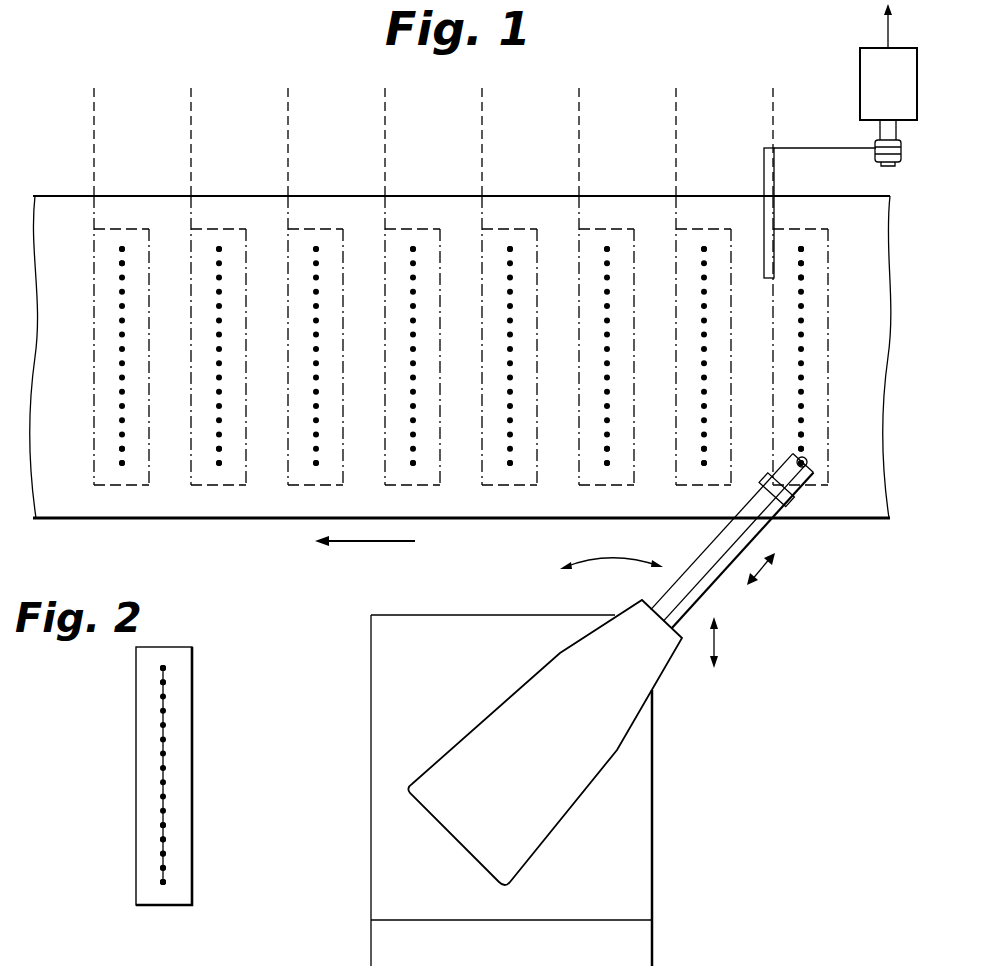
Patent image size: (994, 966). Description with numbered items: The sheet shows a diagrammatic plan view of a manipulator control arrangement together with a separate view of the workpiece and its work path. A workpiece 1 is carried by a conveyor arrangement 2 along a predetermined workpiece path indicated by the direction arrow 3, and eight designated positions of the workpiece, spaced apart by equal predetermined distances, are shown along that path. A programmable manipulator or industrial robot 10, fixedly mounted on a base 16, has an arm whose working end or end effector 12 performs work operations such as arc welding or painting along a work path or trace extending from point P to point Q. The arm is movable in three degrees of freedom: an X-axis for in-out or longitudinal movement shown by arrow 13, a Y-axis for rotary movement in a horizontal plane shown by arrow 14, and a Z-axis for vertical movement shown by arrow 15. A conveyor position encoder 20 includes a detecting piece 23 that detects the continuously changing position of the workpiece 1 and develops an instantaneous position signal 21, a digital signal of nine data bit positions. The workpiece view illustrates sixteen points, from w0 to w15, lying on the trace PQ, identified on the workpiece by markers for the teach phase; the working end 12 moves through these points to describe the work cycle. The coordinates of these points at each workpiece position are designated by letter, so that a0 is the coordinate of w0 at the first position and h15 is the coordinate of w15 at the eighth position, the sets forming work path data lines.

In FIG. 1, the workpiece 1 is at (828, 357).
In FIG. 2, the workpiece 1 is at (183, 760).
In FIG. 1, the conveyor arrangement 2 is at (500, 517).
In FIG. 1, the direction arrow 3 is at (380, 541).
In FIG. 1, the programmable manipulator 10 is at (610, 710).
In FIG. 1, the working end 12 is at (807, 471).
In FIG. 1, the arrow for X-axis 13 is at (763, 568).
In FIG. 1, the arrow for Y-axis 14 is at (610, 562).
In FIG. 1, the arrow for Z-axis 15 is at (715, 640).
In FIG. 1, the base 16 is at (652, 752).
In FIG. 1, the conveyor position encoder 20 is at (860, 95).
In FIG. 1, the instantaneous position signal 21 is at (886, 30).
In FIG. 1, the detecting piece 23 is at (776, 179).
In FIG. 1, the work path start point P is at (809, 464).
In FIG. 2, the work path start point P is at (170, 884).
In FIG. 1, the work path end point Q is at (809, 252).
In FIG. 2, the work path end point Q is at (171, 672).
In FIG. 1, the work path point coordinate h15 is at (122, 249).
In FIG. 1, the work path point coordinate a0 is at (801, 463).
In FIG. 2, the work path point w0 is at (163, 883).
In FIG. 2, the work path point w15 is at (163, 668).